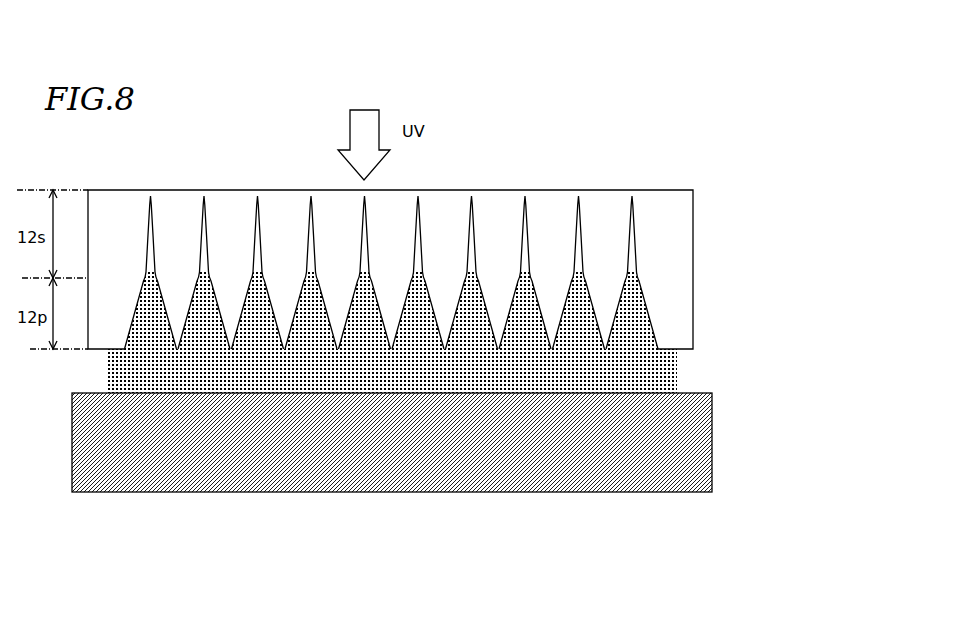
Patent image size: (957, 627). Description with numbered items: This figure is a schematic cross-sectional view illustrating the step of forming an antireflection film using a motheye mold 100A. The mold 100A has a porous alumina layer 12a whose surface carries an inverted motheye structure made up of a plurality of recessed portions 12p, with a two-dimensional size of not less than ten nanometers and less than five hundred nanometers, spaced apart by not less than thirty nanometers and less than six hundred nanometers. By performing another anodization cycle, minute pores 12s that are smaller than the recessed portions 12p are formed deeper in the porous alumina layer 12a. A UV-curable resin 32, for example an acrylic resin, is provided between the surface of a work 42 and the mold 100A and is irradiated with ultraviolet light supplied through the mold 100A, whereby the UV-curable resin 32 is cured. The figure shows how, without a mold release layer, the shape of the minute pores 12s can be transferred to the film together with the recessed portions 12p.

The motheye mold 100A is at (702, 178).
The porous alumina layer 12a is at (685, 268).
The recessed portions 12p is at (578, 297).
The minute pores 12s is at (632, 233).
The UV-curable resin 32 is at (670, 373).
The work 42 is at (698, 443).